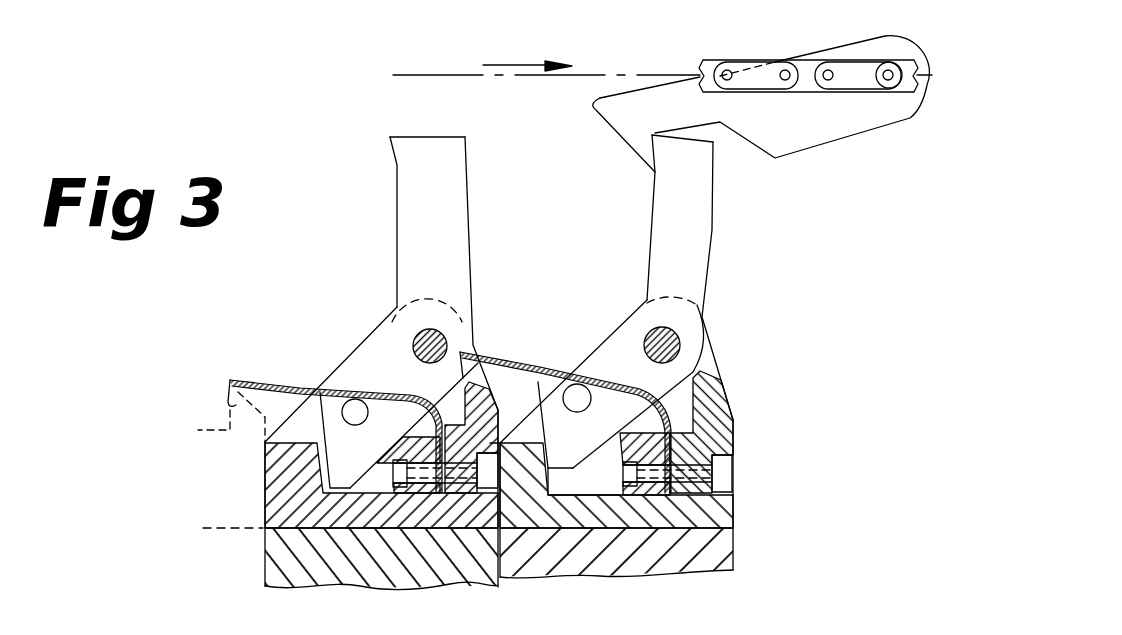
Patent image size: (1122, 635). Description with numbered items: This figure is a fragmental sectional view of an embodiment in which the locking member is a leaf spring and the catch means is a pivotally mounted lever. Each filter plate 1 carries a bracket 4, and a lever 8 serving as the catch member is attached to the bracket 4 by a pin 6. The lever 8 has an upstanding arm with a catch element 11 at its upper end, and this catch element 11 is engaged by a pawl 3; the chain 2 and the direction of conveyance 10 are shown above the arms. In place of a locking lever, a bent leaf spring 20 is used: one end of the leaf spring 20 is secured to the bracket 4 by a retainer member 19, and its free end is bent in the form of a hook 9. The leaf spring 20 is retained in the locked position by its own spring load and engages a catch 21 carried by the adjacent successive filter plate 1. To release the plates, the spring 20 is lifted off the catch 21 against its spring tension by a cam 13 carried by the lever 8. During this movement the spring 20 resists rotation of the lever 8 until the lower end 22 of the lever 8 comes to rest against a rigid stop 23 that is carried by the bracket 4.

The filter plate 1 is at (265, 566).
The chain 2 is at (716, 62).
The pawl 3 is at (832, 141).
The bracket 4 is at (721, 374).
The pin 6 is at (446, 340).
The lever 8 is at (473, 226).
The hook 9 is at (231, 405).
The direction of conveyance 10 is at (515, 62).
The catch element 11 is at (391, 140).
The cam 13 is at (369, 412).
The retainer member 19 is at (398, 444).
The leaf spring 20 is at (290, 382).
The catch 21 is at (486, 392).
The lower end 22 is at (557, 466).
The rigid stop 23 is at (273, 474).